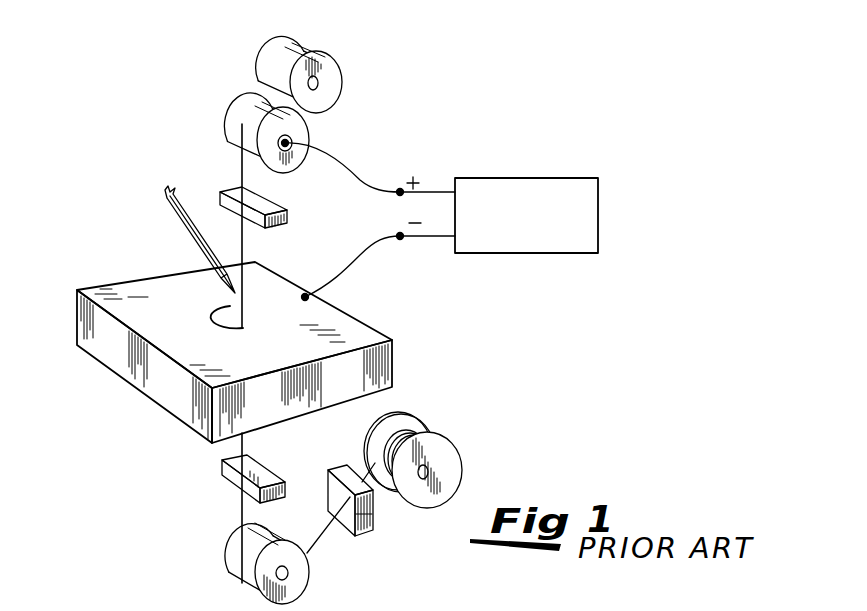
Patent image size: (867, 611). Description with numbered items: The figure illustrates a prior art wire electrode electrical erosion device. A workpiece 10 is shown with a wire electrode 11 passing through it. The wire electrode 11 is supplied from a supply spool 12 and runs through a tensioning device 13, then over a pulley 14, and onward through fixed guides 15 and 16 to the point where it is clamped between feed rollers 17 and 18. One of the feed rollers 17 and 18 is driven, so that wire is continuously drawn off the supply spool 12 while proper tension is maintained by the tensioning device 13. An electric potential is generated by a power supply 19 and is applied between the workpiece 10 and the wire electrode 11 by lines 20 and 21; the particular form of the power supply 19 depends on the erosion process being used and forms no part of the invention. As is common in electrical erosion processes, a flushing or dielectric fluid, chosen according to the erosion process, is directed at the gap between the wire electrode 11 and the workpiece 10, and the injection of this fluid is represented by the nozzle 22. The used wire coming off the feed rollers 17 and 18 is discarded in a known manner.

The workpiece 10 is at (123, 287).
The wire electrode 11 is at (240, 510).
The supply spool 12 is at (416, 413).
The tensioning device 13 is at (373, 535).
The pulley 14 is at (228, 555).
The fixed guide 15 is at (222, 470).
The fixed guide 16 is at (277, 205).
The feed roller 17 is at (242, 102).
The feed roller 18 is at (322, 46).
The power supply 19 is at (577, 178).
The line 20 is at (343, 163).
The line 21 is at (352, 264).
The nozzle 22 is at (177, 212).